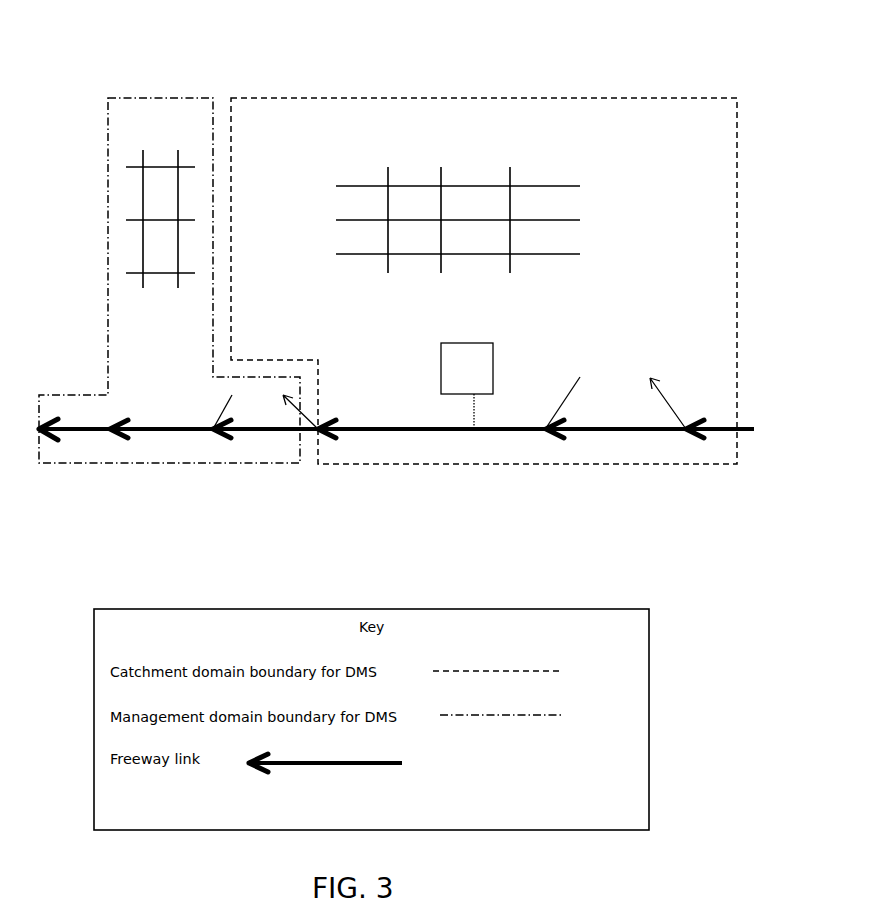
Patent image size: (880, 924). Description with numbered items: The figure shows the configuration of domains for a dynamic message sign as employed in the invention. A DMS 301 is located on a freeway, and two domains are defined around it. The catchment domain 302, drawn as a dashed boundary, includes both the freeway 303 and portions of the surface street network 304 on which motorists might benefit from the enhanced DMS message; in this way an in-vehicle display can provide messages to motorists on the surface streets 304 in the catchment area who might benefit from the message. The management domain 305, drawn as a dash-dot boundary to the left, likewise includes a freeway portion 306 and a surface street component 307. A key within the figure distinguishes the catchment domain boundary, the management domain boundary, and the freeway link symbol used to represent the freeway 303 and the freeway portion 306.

The DMS 301 is at (443, 377).
The catchment domain 302 is at (610, 98).
The freeway 303 is at (523, 430).
The surface street network 304 is at (470, 187).
The management domain 305 is at (108, 277).
The freeway portion 306 is at (175, 428).
The surface street component 307 is at (143, 147).